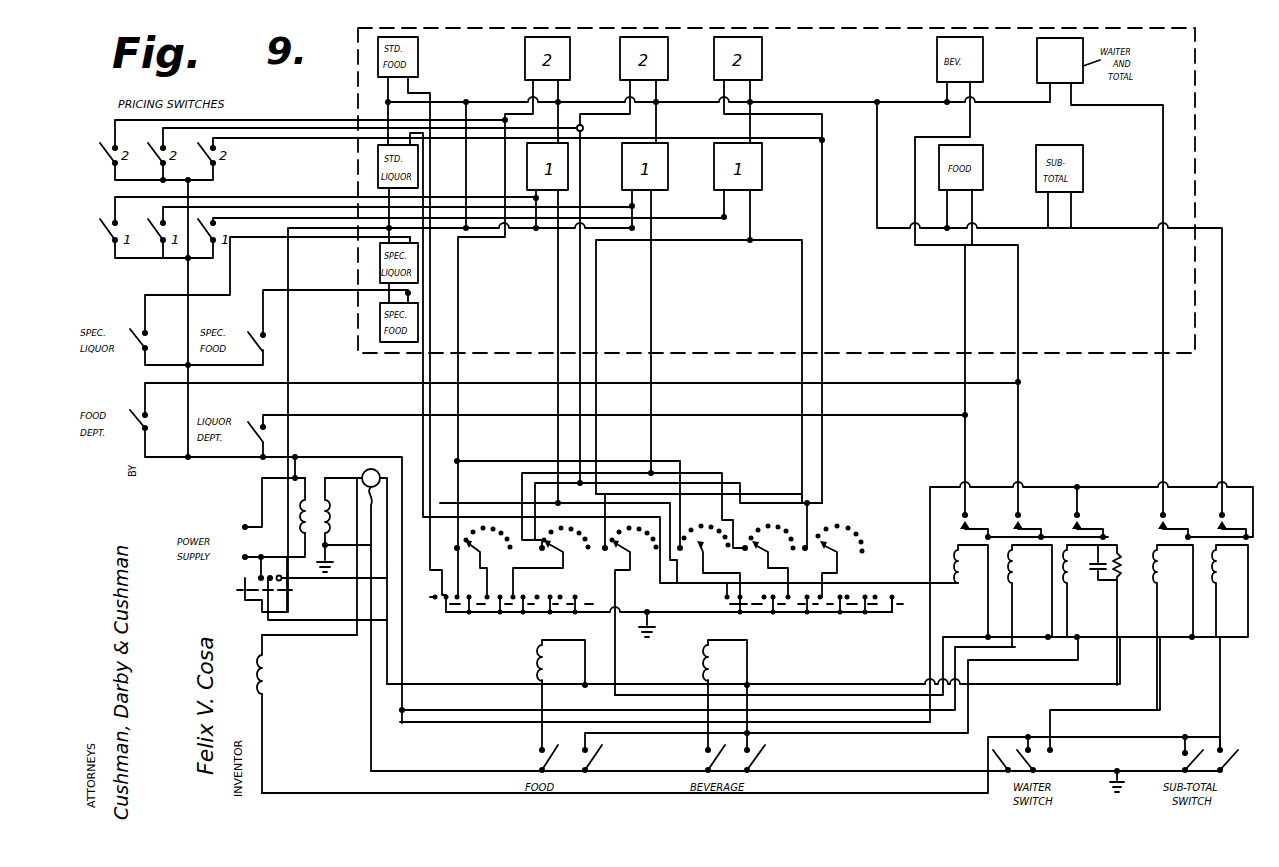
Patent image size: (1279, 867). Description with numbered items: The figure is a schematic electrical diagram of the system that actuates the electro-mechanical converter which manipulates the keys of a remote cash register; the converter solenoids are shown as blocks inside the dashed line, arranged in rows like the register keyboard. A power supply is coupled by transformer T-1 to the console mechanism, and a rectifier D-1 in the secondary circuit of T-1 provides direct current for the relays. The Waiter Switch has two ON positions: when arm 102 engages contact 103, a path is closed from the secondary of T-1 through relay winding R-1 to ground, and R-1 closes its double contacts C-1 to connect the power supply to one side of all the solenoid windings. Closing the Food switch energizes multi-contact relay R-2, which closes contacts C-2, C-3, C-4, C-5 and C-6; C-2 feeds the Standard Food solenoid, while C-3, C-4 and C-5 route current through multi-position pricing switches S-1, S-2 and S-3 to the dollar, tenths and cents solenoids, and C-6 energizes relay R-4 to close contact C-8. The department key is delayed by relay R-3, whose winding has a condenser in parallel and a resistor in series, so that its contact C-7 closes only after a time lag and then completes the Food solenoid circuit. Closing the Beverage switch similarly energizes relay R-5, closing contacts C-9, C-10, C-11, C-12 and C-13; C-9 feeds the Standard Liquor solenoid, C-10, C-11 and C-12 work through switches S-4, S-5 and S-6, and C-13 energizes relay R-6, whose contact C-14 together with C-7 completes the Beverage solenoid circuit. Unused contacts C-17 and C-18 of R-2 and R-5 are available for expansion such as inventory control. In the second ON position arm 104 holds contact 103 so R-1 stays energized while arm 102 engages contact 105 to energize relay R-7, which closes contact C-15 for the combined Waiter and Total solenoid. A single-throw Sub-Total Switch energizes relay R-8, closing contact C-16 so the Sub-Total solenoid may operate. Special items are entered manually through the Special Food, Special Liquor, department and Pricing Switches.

The transformer T-1 is at (315, 506).
The rectifier D-1 is at (370, 620).
The double contacts C-1 is at (264, 572).
The relay winding R-1 is at (290, 664).
The multi-contact relay R-2 is at (545, 662).
The time delay relay R-3 is at (1092, 615).
The relay R-4 is at (1030, 596).
The multi-position relay winding R-5 is at (725, 662).
The relay R-6 is at (971, 591).
The relay R-7 is at (1173, 627).
The relay R-8 is at (1230, 647).
The multi-position switch S-1 is at (483, 562).
The multi-position switch S-2 is at (552, 562).
The multi-position switch S-3 is at (630, 611).
The multi-position switch S-4 is at (708, 561).
The multi-position switch S-5 is at (769, 561).
The multi-position switch S-6 is at (833, 561).
The contact C-2 is at (470, 598).
The contact C-3 is at (499, 598).
The contact C-4 is at (523, 598).
The contact C-5 is at (547, 598).
The contact C-6 is at (576, 600).
The contact C-7 is at (1089, 526).
The contact C-8 is at (1028, 524).
The contact C-9 is at (736, 598).
The contact C-10 is at (768, 598).
The contact C-11 is at (802, 598).
The contact C-12 is at (838, 598).
The contact C-13 is at (861, 600).
The contact C-14 is at (975, 526).
The contact C-15 is at (1175, 526).
The contact C-16 is at (1233, 526).
The unused contact C-17 is at (443, 594).
The unused contact C-18 is at (891, 599).
The arm 102 is at (1036, 758).
The contact 103 is at (1031, 745).
The arm 104 is at (1003, 757).
The contact 105 is at (1053, 752).